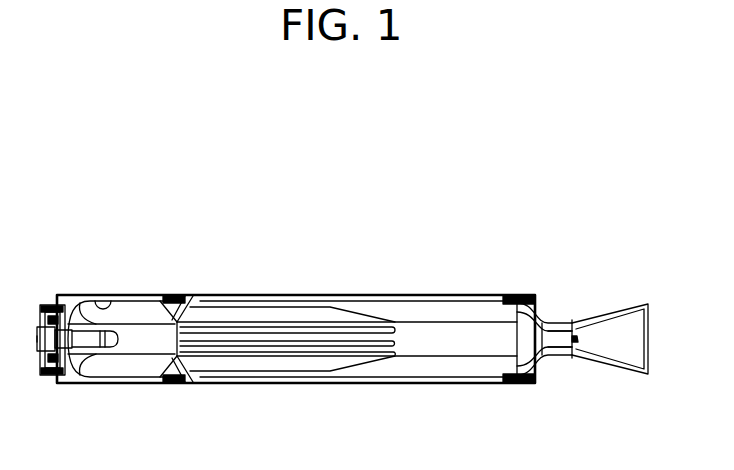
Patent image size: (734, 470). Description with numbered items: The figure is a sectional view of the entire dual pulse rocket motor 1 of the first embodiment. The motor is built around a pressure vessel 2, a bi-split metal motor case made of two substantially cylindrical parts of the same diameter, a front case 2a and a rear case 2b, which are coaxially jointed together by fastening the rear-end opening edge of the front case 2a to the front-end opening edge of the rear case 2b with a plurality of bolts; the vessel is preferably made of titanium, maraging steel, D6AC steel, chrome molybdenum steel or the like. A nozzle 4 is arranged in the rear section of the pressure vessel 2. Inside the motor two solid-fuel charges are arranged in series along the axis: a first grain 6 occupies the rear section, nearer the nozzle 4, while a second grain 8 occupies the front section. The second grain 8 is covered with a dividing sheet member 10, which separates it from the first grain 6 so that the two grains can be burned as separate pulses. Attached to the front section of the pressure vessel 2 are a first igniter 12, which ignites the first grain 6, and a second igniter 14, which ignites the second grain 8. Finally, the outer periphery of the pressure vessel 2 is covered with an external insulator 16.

The dual pulse rocket motor 1 is at (448, 197).
The pressure vessel 2 is at (205, 243).
The front case 2a is at (92, 298).
The rear case 2b is at (380, 301).
The nozzle 4 is at (563, 320).
The first grain 6 is at (458, 306).
The second grain 8 is at (135, 312).
The dividing sheet member 10 is at (150, 347).
The first igniter 12 is at (88, 342).
The second igniter 14 is at (48, 297).
The external insulator 16 is at (170, 297).